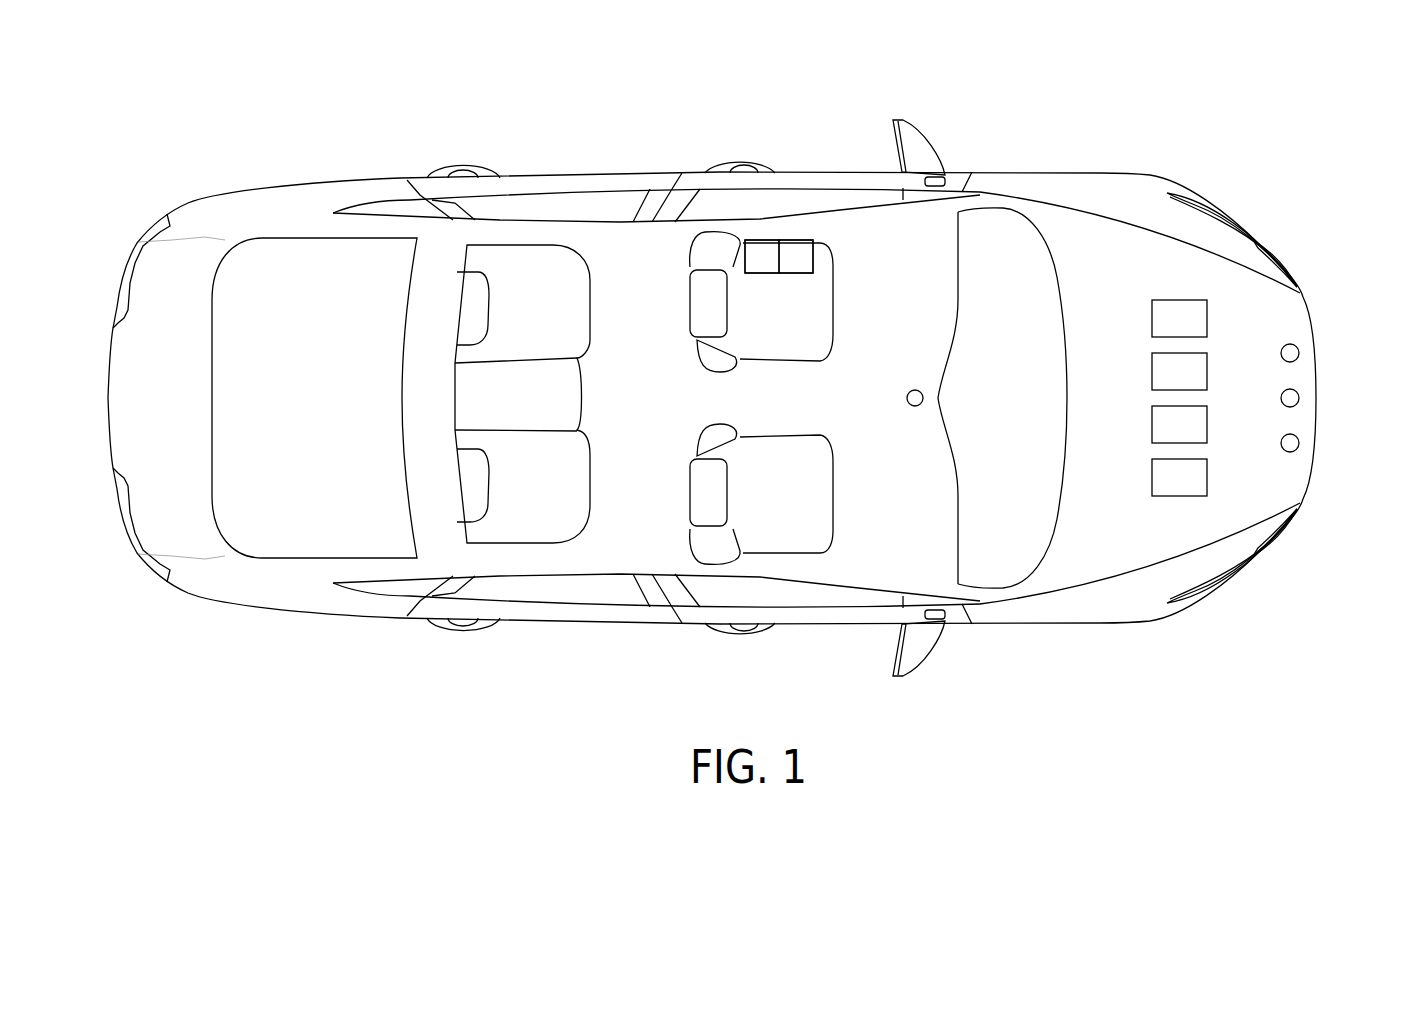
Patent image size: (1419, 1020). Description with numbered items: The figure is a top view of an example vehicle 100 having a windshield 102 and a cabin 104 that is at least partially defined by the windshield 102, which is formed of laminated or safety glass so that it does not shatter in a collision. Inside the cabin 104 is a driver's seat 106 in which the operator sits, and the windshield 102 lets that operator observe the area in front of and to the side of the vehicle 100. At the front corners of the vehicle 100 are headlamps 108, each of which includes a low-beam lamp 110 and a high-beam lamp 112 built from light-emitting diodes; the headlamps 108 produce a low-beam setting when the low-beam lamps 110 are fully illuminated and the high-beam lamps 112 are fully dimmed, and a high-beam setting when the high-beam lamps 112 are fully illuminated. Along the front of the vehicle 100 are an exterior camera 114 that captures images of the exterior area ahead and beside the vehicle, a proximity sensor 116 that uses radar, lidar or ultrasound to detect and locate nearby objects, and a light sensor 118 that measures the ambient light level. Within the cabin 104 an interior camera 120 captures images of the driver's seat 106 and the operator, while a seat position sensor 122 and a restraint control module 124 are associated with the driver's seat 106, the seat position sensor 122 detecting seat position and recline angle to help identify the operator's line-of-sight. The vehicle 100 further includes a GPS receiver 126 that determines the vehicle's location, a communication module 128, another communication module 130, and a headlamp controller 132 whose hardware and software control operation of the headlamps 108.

The vehicle 100 is at (1043, 172).
The windshield 102 is at (1007, 548).
The cabin 104 is at (668, 412).
The driver's seat 106 is at (797, 322).
The headlamps 108 is at (1233, 192).
The low-beam lamp 110 is at (1273, 257).
The high-beam lamp 112 is at (1238, 220).
The exterior camera 114 is at (1299, 353).
The proximity sensor 116 is at (1299, 398).
The light sensor 118 is at (1299, 443).
The interior camera 120 is at (907, 398).
The seat position sensor 122 is at (762, 255).
The restraint control module 124 is at (795, 255).
The GPS receiver 126 is at (1197, 330).
The communication module 128 is at (1197, 383).
The communication module 130 is at (1197, 436).
The headlamp controller 132 is at (1197, 489).